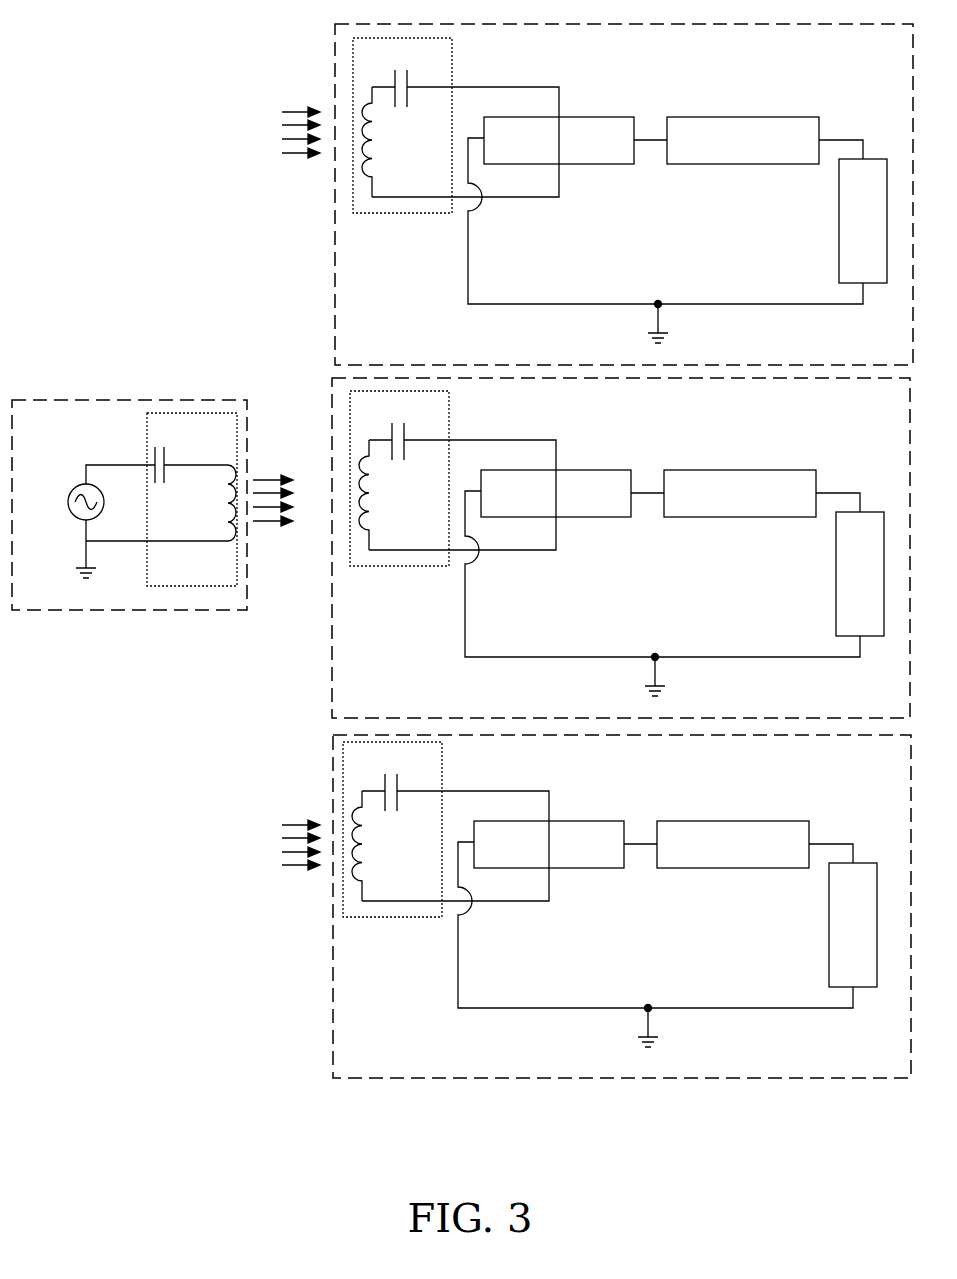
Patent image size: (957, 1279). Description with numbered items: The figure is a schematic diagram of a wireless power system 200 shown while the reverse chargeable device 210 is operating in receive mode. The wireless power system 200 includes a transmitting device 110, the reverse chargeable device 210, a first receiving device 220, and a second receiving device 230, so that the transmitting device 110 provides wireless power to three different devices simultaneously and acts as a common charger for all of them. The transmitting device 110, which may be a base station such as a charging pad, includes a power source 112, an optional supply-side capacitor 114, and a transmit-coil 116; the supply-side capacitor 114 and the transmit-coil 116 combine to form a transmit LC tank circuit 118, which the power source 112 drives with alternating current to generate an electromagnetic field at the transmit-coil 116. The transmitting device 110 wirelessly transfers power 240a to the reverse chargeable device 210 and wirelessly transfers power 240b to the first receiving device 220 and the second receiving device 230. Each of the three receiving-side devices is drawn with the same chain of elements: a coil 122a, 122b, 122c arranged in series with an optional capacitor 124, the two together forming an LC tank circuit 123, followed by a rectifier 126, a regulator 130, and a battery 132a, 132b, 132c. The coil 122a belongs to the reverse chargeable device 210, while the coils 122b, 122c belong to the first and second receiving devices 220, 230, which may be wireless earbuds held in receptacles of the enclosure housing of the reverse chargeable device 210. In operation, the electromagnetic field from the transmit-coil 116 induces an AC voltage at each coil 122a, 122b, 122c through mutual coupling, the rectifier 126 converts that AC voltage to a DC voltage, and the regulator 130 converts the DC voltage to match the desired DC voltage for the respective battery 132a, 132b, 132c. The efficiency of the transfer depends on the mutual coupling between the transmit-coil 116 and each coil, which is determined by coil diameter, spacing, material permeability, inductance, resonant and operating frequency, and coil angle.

The wireless power system 200 is at (153, 79).
The transmitting device 110 is at (124, 398).
The power source 112 is at (68, 500).
The supply-side capacitor 114 is at (171, 453).
The transmit-coil 116 is at (218, 546).
The transmit LC tank circuit 118 is at (147, 437).
The power 240a is at (273, 471).
The power 240b is at (300, 107).
The reverse chargeable device 210 is at (330, 684).
The first receiving device 220 is at (332, 296).
The second receiving device 230 is at (330, 997).
The LC tank circuit 123 is at (456, 147).
The capacitor 124 is at (404, 82).
The coil 122a is at (384, 495).
The coil 122b is at (388, 142).
The coil 122c is at (377, 846).
The rectifier 126 is at (588, 116).
The regulator 130 is at (752, 117).
The battery 132a is at (832, 574).
The battery 132b is at (839, 224).
The battery 132c is at (825, 925).